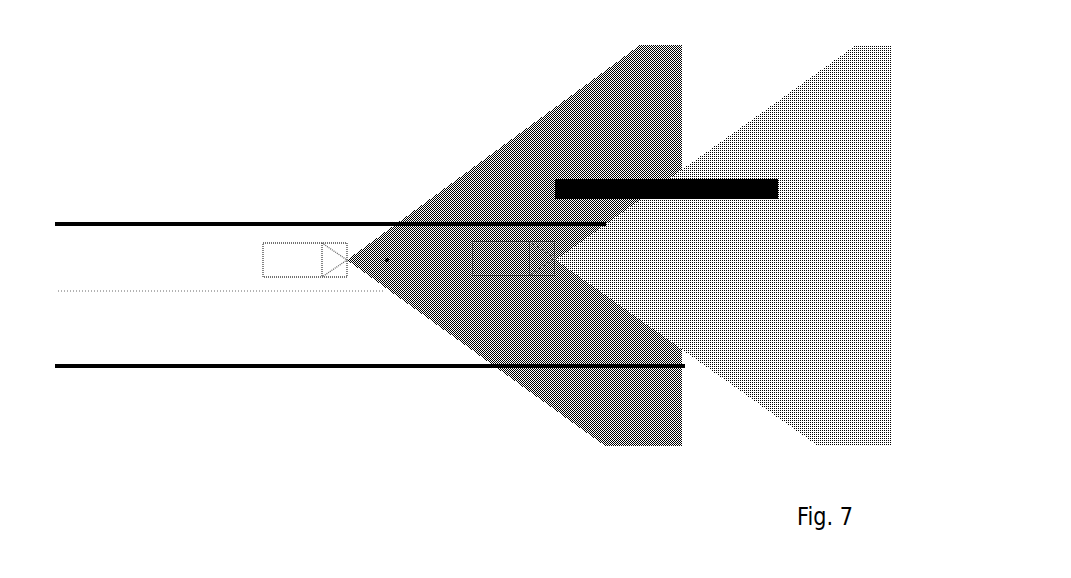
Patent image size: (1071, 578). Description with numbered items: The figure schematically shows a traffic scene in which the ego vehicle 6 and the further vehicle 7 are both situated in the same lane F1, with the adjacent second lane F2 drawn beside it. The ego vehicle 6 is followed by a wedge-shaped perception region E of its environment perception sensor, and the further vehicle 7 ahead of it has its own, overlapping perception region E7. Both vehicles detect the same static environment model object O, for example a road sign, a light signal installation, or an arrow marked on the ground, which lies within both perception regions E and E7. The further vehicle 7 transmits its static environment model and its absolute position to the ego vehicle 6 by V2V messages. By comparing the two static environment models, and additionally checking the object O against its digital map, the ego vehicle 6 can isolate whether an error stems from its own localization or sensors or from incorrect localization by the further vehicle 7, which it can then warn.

The ego vehicle 6 is at (287, 245).
The further vehicle 7 is at (478, 242).
The perception region E is at (548, 137).
The perception region of the further vehicle E7 is at (748, 148).
The static environment model object O is at (667, 178).
The first lane F1 is at (322, 250).
The second lane F2 is at (361, 341).